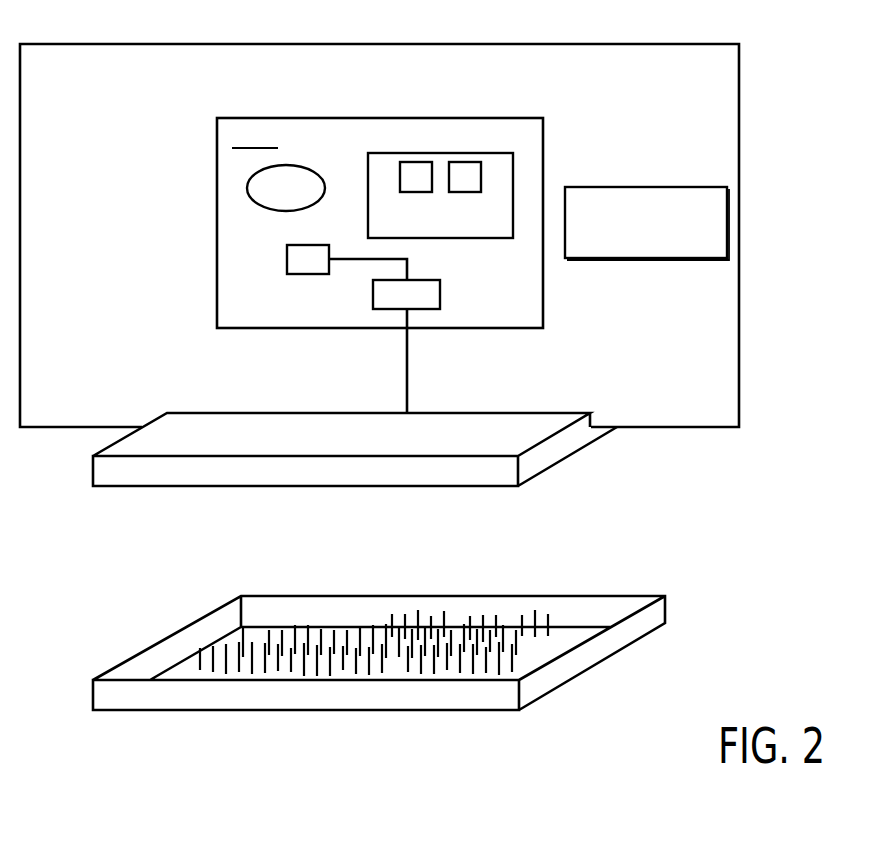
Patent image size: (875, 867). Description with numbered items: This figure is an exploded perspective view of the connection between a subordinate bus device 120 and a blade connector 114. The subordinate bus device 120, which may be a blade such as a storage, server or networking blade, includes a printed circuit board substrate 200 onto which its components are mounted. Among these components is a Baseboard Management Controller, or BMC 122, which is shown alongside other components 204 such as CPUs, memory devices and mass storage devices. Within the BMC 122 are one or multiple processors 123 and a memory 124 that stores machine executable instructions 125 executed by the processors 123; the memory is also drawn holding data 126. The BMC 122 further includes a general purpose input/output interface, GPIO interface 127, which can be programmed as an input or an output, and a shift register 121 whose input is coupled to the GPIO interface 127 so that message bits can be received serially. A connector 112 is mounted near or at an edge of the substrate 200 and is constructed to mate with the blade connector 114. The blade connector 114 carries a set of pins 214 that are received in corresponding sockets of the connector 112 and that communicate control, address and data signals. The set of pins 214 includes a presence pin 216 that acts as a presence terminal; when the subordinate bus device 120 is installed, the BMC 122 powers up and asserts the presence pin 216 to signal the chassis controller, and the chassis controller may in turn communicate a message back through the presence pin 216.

The printed circuit board substrate 200 is at (153, 43).
The subordinate bus device 120 is at (560, 43).
The Baseboard Management Controller (BMC) 122 is at (460, 117).
The processor 123 is at (252, 200).
The memory 124 is at (513, 176).
The machine executable instructions 125 is at (415, 161).
The data 126 is at (465, 161).
The shift register 121 is at (305, 275).
The general purpose input/output (GPIO) interface 127 is at (441, 295).
The other components 204 is at (628, 187).
The connector 112 is at (567, 437).
The blade connector 114 is at (612, 640).
The set of pins 214 is at (608, 558).
The presence pin 216 is at (395, 618).